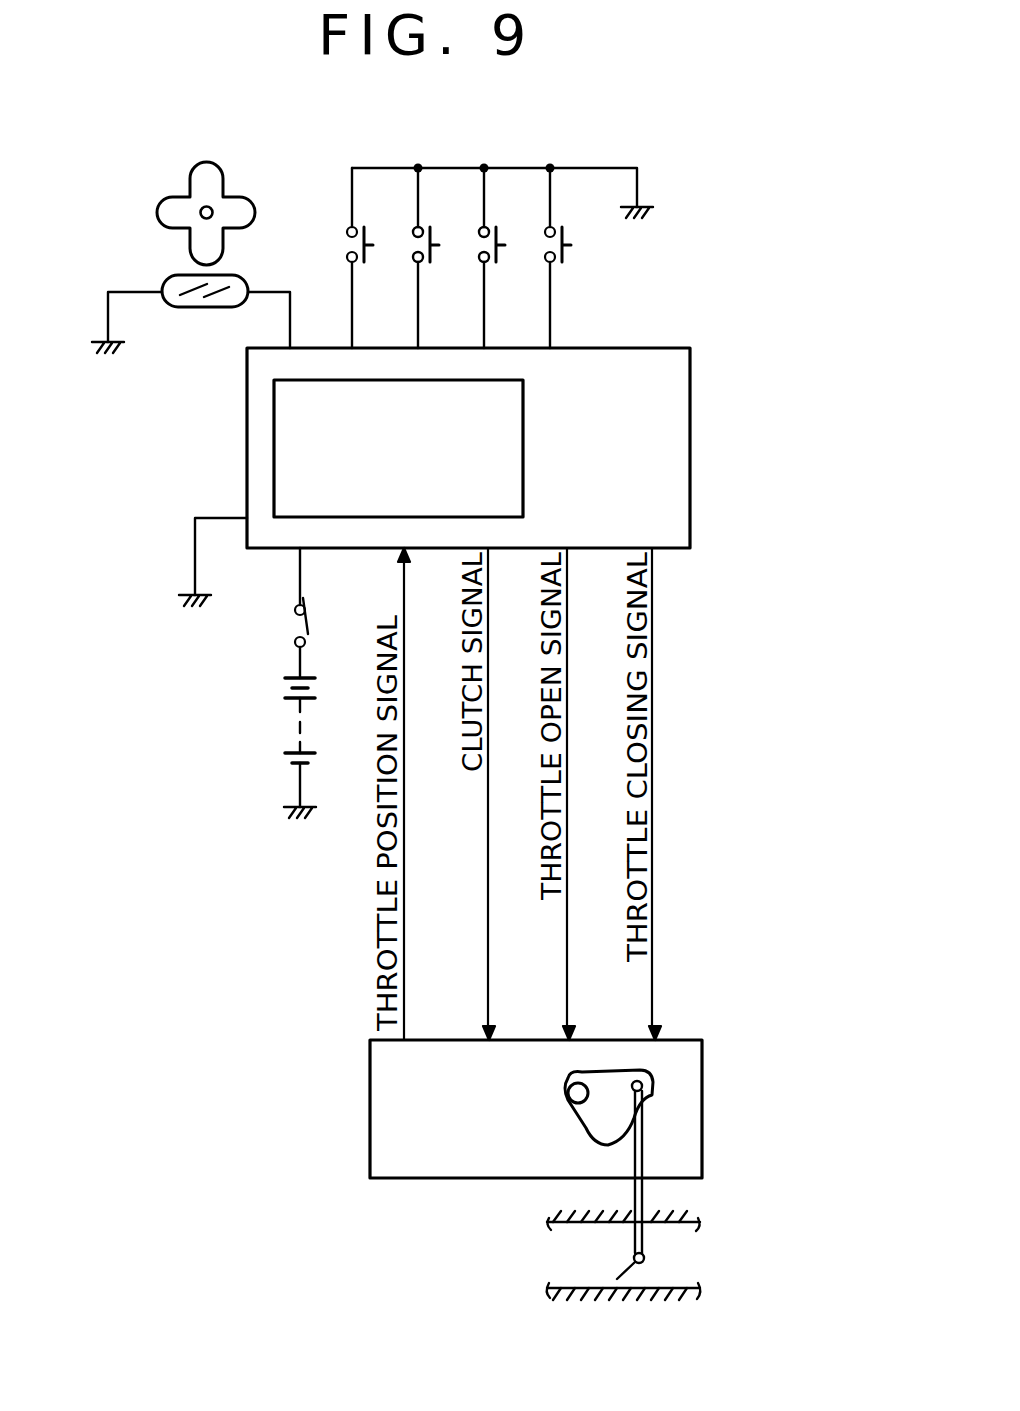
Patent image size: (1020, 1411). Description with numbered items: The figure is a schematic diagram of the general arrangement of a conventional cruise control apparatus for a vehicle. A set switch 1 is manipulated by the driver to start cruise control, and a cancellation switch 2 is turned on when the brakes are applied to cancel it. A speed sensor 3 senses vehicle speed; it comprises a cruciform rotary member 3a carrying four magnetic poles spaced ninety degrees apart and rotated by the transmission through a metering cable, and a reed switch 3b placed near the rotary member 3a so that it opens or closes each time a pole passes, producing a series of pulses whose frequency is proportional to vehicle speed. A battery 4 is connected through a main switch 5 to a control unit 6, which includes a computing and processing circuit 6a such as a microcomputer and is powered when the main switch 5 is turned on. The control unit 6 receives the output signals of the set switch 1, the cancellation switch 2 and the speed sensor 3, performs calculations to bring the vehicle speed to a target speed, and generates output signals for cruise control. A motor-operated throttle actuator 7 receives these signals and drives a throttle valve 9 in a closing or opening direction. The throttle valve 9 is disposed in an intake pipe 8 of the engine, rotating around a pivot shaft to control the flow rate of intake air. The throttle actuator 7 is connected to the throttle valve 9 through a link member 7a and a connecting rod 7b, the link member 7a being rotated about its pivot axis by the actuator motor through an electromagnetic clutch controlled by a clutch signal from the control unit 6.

The set switch 1 is at (573, 231).
The cancellation switch 2 is at (366, 232).
The speed sensor 3 is at (191, 265).
The cruciform rotary member 3a is at (222, 184).
The reed switch 3b is at (203, 308).
The battery 4 is at (288, 704).
The main switch 5 is at (305, 622).
The control unit 6 is at (457, 448).
The computing and processing circuit 6a is at (274, 427).
The throttle actuator 7 is at (702, 1105).
The link member 7a is at (583, 1123).
The connecting rod 7b is at (645, 1186).
The intake pipe 8 is at (557, 1291).
The throttle valve 9 is at (655, 1240).